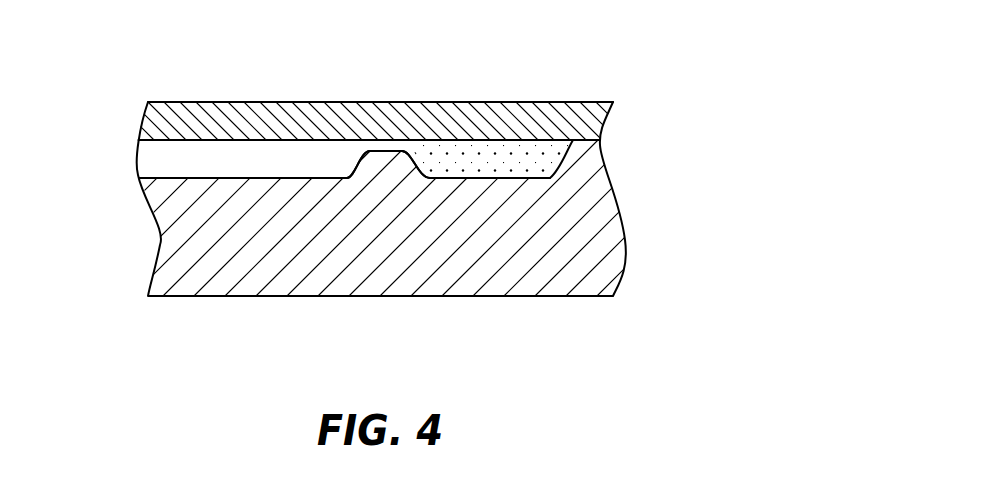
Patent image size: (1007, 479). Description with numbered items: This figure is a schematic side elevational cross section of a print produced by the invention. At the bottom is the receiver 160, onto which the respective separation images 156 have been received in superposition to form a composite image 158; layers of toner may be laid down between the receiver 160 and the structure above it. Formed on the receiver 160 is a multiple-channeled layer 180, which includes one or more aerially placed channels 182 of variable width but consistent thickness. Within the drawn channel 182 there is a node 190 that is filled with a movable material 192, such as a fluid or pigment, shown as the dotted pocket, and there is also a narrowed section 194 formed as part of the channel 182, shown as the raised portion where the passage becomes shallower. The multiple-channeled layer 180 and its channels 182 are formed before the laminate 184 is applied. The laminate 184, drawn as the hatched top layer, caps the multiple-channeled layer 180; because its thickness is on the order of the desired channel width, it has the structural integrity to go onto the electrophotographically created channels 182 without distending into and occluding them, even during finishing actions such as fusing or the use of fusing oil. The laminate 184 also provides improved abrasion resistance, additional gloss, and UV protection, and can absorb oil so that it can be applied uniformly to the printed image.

The separation images 156 is at (178, 178).
The composite image 158 is at (140, 178).
The receiver 160 is at (602, 193).
The multiple-channeled layer 180 is at (150, 153).
The channel 182 is at (194, 142).
The laminate 184 is at (582, 102).
The node 190 is at (457, 178).
The movable material 192 is at (522, 178).
The narrowed section 194 is at (387, 151).